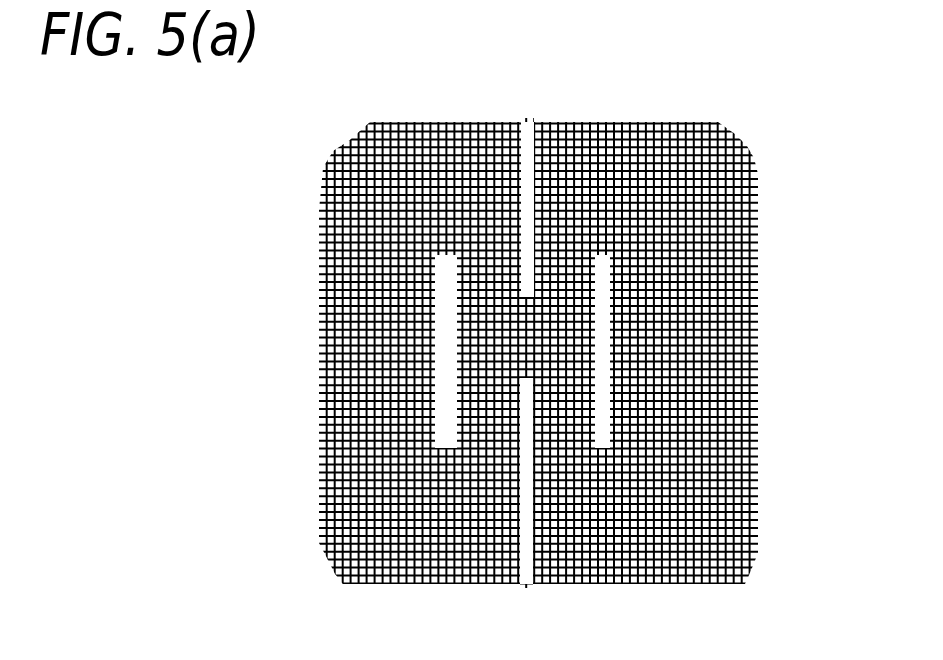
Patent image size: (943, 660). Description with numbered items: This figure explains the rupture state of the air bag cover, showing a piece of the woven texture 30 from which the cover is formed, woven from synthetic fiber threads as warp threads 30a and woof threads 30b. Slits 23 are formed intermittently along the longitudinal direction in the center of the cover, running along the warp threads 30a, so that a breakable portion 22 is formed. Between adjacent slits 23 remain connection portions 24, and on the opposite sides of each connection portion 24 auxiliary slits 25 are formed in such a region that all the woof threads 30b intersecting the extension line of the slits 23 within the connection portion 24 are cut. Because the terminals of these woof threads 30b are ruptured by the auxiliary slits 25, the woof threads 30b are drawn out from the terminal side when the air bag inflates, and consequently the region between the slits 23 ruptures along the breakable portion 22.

The breakable portion 22 is at (790, 70).
The slit 23 is at (527, 140).
The connection portion 24 is at (537, 322).
The auxiliary slit 25 is at (604, 318).
The woven texture 30 is at (298, 277).
The warp thread 30a is at (415, 123).
The woof thread 30b is at (353, 138).